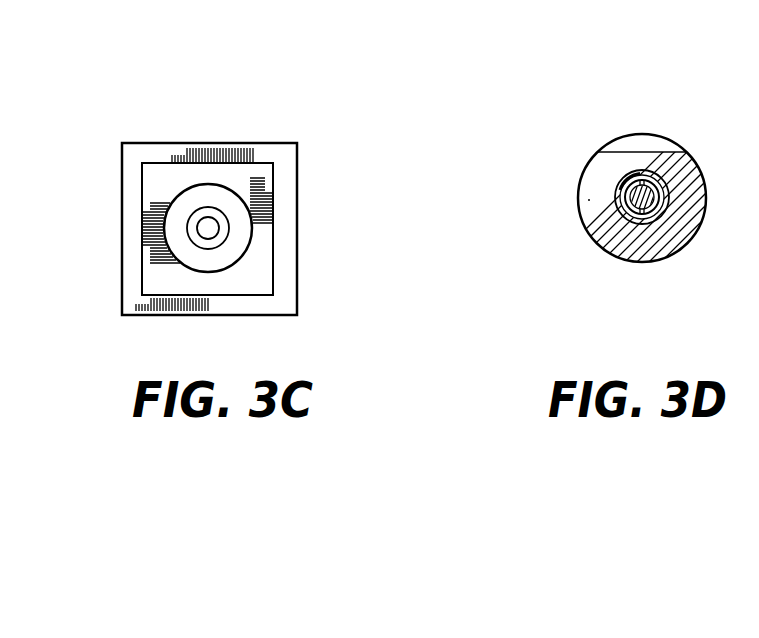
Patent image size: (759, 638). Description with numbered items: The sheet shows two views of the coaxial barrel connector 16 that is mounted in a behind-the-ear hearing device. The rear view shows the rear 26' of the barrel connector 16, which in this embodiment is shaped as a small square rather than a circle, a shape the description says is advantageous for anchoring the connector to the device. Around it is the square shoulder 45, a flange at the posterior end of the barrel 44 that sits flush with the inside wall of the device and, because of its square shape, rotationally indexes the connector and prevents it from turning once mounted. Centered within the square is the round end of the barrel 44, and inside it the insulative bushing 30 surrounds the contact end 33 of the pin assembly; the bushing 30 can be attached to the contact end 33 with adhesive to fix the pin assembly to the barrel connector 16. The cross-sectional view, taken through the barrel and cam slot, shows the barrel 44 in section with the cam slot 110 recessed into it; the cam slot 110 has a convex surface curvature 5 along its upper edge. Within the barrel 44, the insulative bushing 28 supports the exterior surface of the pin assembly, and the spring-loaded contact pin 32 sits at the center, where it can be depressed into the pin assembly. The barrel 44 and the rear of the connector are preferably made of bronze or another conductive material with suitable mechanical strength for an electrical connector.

In FIG. 3C, the rear of the barrel connector 26' is at (207, 197).
In FIG. 3C, the square shoulder 45 is at (207, 146).
In FIG. 3C, the insulative bushing 30 is at (208, 258).
In FIG. 3C, the contact end 33 is at (229, 229).
In FIG. 3D, the barrel connector 16 is at (556, 150).
In FIG. 3D, the cam slot 110 is at (645, 141).
In FIG. 3D, the convex surface curvature 5 is at (660, 152).
In FIG. 3D, the spring-loaded contact pin 32 is at (667, 197).
In FIG. 3D, the barrel 44 is at (588, 200).
In FIG. 3D, the insulative bushing 28 is at (642, 220).